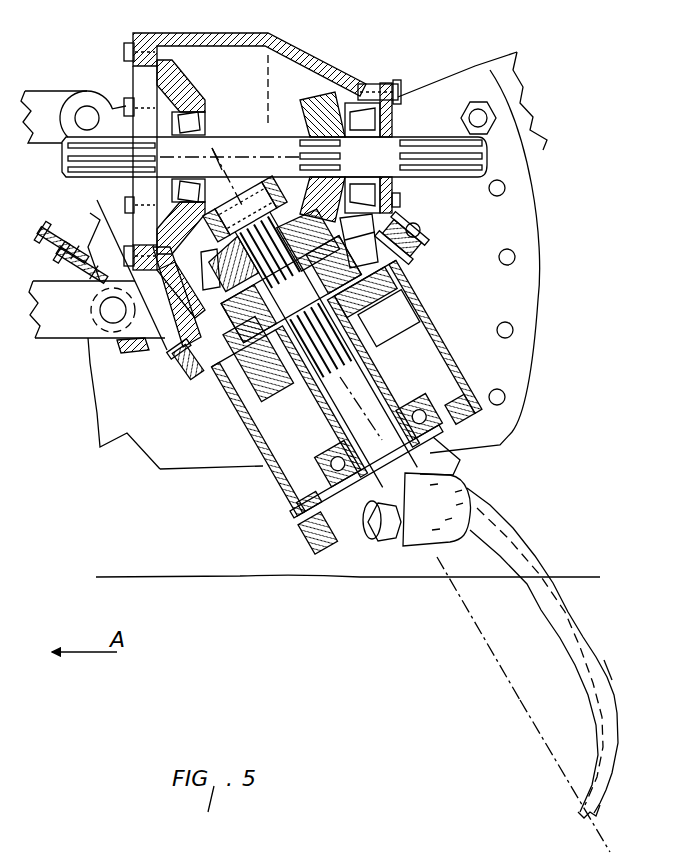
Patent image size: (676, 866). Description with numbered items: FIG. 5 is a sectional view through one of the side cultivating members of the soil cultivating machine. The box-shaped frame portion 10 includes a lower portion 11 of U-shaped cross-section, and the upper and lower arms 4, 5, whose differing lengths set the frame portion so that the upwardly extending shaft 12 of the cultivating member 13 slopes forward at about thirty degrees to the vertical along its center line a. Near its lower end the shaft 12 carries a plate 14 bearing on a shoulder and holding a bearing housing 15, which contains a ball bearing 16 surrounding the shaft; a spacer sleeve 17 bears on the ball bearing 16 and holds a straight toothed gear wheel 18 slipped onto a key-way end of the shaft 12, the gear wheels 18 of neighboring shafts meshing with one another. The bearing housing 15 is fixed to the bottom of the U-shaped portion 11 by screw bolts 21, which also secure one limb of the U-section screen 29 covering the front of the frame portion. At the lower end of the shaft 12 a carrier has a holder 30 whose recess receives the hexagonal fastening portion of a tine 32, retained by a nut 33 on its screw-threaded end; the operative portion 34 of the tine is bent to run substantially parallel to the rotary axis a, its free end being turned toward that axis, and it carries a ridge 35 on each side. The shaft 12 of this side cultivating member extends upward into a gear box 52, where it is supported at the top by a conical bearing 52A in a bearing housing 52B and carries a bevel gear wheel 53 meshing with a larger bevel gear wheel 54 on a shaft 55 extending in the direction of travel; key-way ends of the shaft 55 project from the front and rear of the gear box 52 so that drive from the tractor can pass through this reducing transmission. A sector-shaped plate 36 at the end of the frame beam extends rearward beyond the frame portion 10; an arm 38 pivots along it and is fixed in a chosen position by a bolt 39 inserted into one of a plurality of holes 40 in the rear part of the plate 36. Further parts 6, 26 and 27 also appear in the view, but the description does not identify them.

The upper arm 4 is at (52, 92).
The lower arm 5 is at (55, 336).
The pivot eye 6 is at (93, 108).
The box-shaped frame portion 10 is at (448, 350).
The lower portion 11 is at (462, 376).
The shaft 12 is at (360, 378).
The cultivating member 13 is at (497, 619).
The plate 14 is at (425, 462).
The bearing housing 15 is at (408, 410).
The ball bearing 16 is at (322, 456).
The spacer sleeve 17 is at (318, 425).
The straight toothed gear wheel 18 is at (248, 398).
The screw bolts 21 is at (301, 543).
The frame 26 is at (92, 366).
The pivot pin 27 is at (132, 352).
The screen 29 is at (310, 553).
The holder 30 is at (410, 545).
The tine 32 is at (590, 636).
The nut 33 is at (376, 540).
The operative portion 34 is at (536, 568).
The ridge 35 is at (603, 668).
The sector-shaped plate 36 is at (537, 284).
The arm 38 is at (545, 152).
The bolt 39 is at (470, 112).
The holes 40 is at (516, 258).
The gear box 52 is at (249, 40).
The conical bearing 52A is at (264, 302).
The bearing housing 52B is at (212, 388).
The bevel gear wheel 53 is at (205, 258).
The larger bevel gear wheel 54 is at (320, 100).
The shaft 55 is at (72, 180).
The center line a is at (512, 688).